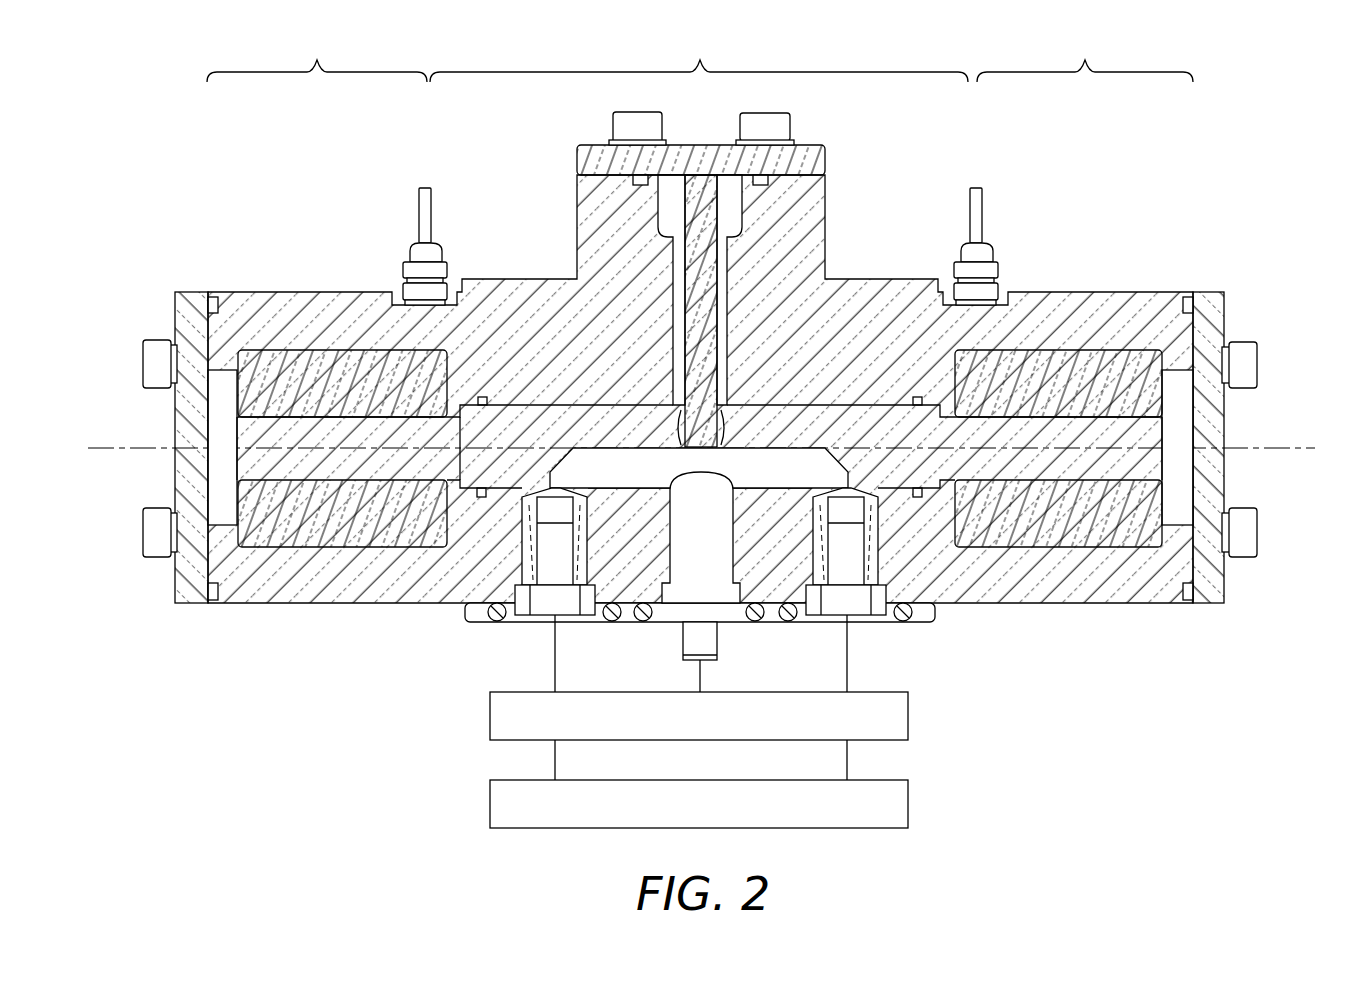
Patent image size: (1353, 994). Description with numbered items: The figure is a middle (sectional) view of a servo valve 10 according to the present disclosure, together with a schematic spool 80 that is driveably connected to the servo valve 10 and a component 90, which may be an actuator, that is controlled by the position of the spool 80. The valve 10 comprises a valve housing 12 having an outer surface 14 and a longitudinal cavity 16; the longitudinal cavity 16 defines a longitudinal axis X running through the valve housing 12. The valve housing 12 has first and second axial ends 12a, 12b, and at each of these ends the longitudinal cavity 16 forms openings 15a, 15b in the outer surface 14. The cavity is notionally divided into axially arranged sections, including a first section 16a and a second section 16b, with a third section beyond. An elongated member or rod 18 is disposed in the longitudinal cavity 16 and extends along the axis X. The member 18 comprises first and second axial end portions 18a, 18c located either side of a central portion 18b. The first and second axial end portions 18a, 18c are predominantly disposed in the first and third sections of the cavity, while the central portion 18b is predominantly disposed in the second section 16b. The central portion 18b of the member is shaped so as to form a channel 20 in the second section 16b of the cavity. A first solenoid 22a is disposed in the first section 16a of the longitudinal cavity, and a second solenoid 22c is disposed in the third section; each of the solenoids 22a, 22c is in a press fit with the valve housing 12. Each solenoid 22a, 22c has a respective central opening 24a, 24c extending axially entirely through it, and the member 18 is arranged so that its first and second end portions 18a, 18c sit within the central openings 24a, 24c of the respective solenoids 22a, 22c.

The servo valve 10 is at (1222, 188).
The valve housing 12 is at (352, 300).
The first axial end 12a is at (207, 325).
The second axial end 12b is at (1198, 325).
The outer surface 14 is at (882, 279).
The opening 15a is at (198, 381).
The opening 15b is at (1204, 381).
The longitudinal cavity 16 is at (532, 386).
The first section of the longitudinal cavity 16a is at (700, 59).
The second section of the longitudinal cavity 16b is at (699, 106).
The elongated member 18 is at (381, 467).
The first axial end portion 18a is at (272, 467).
The central portion 18b is at (505, 467).
The second axial end portion 18c is at (1130, 467).
The channel 20 is at (768, 470).
The first solenoid 22a is at (270, 365).
The second solenoid 22c is at (1122, 365).
The central opening 24a is at (260, 412).
The central opening 24c is at (1130, 416).
The spool 80 is at (908, 712).
The component 90 is at (908, 802).